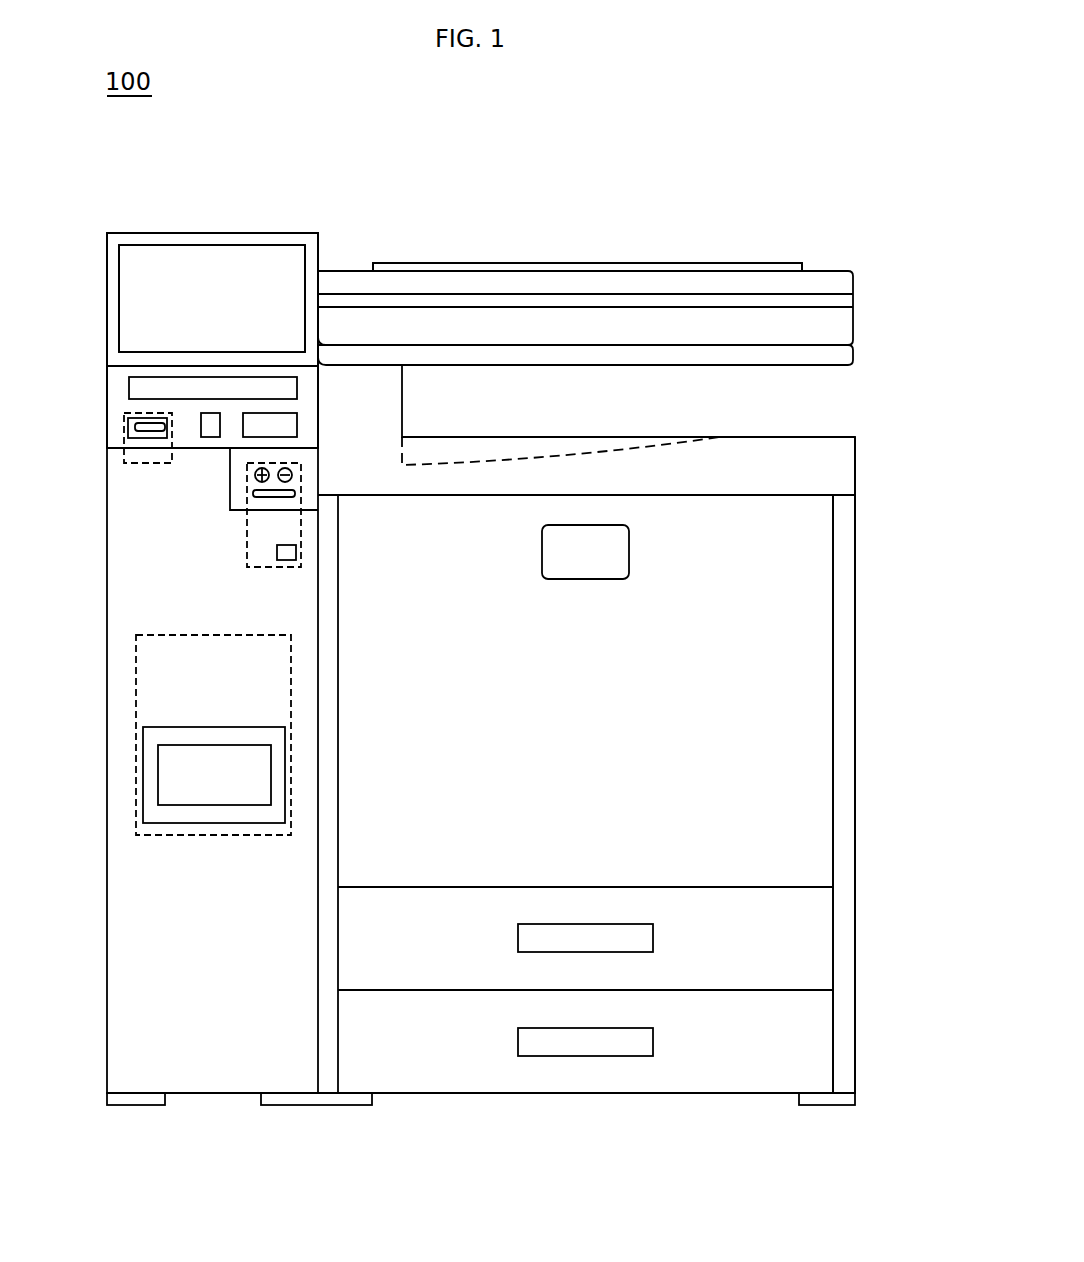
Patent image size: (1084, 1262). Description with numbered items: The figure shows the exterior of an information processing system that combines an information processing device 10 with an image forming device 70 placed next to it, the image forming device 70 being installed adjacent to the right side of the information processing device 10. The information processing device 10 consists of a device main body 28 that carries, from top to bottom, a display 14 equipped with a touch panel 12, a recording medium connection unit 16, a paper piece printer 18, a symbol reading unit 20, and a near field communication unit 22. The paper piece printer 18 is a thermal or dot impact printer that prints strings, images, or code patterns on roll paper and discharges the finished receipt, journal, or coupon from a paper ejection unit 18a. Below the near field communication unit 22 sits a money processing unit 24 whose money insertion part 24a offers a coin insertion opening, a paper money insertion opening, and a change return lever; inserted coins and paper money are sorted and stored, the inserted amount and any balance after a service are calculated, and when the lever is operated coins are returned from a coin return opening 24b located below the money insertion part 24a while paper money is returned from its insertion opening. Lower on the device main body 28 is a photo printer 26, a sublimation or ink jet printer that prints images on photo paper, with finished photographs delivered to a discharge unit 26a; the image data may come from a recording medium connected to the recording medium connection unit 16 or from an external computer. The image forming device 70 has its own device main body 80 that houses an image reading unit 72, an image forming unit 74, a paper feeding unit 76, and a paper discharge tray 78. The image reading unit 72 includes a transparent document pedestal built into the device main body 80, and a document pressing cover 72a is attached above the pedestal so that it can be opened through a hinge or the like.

The information processing device 10 is at (252, 233).
The touch panel 12 is at (163, 250).
The display 14 is at (212, 298).
The recording medium connection unit 16 is at (145, 388).
The paper piece printer 18 is at (125, 412).
The paper ejection unit 18a is at (130, 428).
The symbol reading unit 20 is at (208, 433).
The near field communication unit 22 is at (270, 425).
The money processing unit 24 is at (245, 558).
The money insertion part 24a is at (265, 499).
The coin return opening 24b is at (277, 560).
The photo printer 26 is at (130, 657).
The discharge unit 26a is at (158, 768).
The device main body 28 is at (107, 968).
The image forming device 70 is at (610, 253).
The image reading unit 72 is at (857, 303).
The document pressing cover 72a is at (817, 272).
The image forming unit 74 is at (825, 845).
The paper feeding unit 76 is at (820, 942).
The paper discharge tray 78 is at (818, 435).
The device main body 80 is at (855, 755).